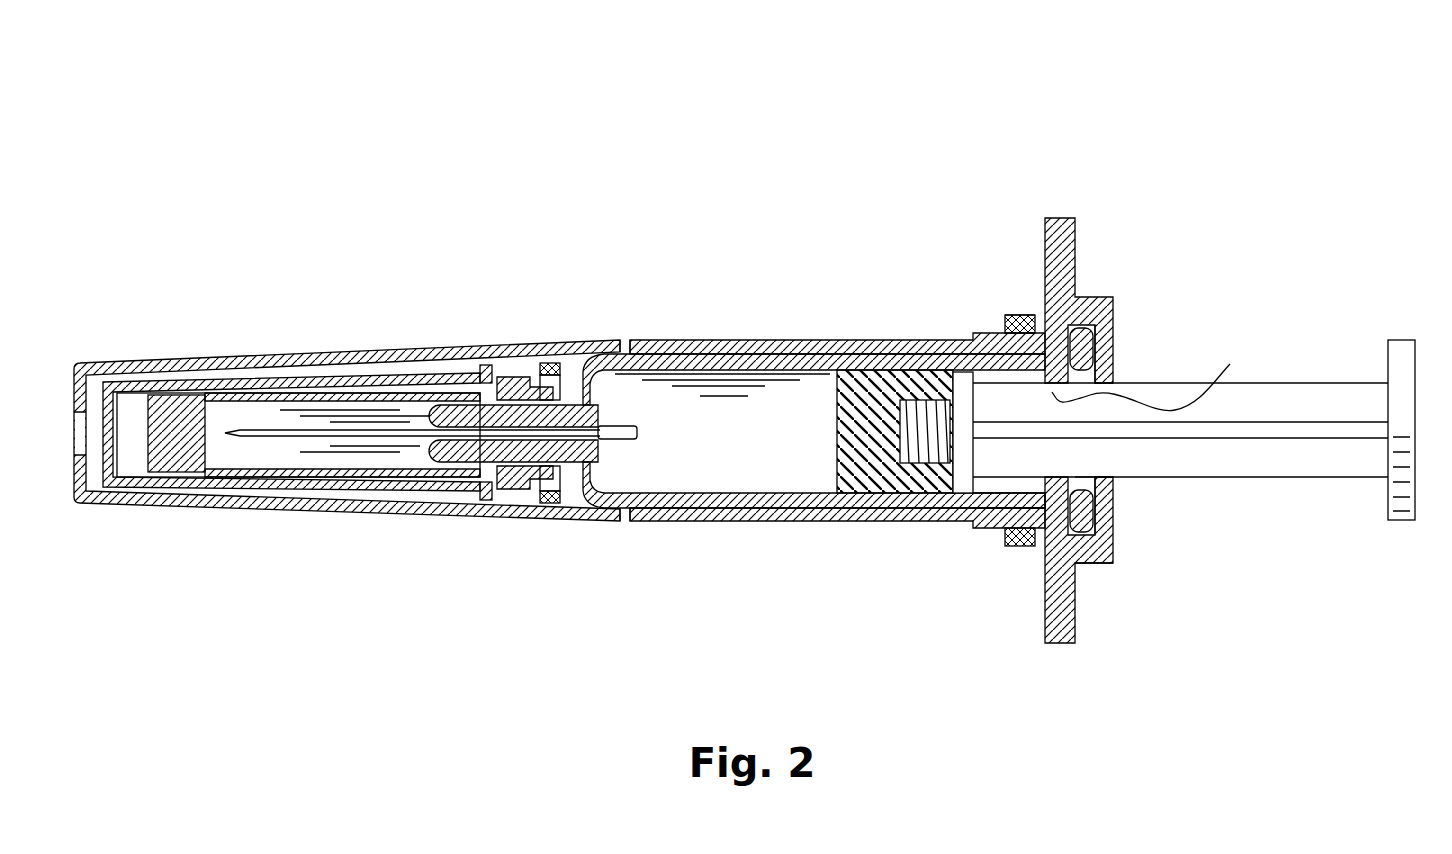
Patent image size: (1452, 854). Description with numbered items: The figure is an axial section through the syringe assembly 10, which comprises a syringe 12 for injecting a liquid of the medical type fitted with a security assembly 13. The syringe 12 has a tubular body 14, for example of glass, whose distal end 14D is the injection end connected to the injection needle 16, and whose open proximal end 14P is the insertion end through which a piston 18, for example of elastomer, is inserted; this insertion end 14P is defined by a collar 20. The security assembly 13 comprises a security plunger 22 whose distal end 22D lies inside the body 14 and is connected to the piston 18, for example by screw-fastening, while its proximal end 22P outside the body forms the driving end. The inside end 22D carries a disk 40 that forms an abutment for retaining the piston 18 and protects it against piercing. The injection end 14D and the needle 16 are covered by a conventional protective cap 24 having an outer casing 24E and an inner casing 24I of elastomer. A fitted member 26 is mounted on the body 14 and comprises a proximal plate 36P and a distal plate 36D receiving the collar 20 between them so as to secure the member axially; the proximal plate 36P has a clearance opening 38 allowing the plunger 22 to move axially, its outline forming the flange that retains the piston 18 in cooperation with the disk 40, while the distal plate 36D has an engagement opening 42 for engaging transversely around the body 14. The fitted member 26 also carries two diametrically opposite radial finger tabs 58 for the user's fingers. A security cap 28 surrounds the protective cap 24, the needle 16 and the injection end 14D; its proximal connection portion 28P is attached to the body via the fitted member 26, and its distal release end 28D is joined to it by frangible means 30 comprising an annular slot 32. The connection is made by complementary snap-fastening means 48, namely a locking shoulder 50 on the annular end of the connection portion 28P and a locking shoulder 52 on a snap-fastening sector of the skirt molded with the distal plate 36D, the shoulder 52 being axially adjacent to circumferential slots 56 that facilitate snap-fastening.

The syringe assembly 10 is at (611, 210).
The syringe 12 is at (770, 395).
The security assembly 13 is at (384, 346).
The tubular body 14 is at (708, 366).
The distal end of the body 14D is at (497, 408).
The proximal end of the body 14P is at (1040, 548).
The injection needle 16 is at (378, 433).
The piston 18 is at (833, 462).
The collar 20 is at (1093, 348).
The security plunger 22 is at (1198, 466).
The distal end of the plunger 22D is at (963, 482).
The proximal end of the plunger 22P is at (1375, 466).
The protective cap 24 is at (305, 494).
The outer casing 24E is at (232, 490).
The inner casing 24I is at (152, 450).
The fitted member 26 is at (1142, 290).
The security cap 28 is at (237, 350).
The distal end of the security cap 28D is at (152, 360).
The proximal portion of the security cap 28P is at (875, 352).
The frangible means 30 is at (622, 516).
The annular slot 32 is at (626, 352).
The proximal plate 36P is at (1114, 352).
The distal plate 36D is at (1085, 566).
The clearance opening 38 is at (1105, 476).
The disk 40 is at (905, 482).
The engagement opening 42 is at (1150, 373).
The complementary snap-fastening means 48 is at (1016, 296).
The locking shoulder 50 is at (1022, 320).
The locking shoulder 52 is at (1036, 312).
The circumferential slots 56 is at (1040, 546).
The radial finger tabs 58 is at (1077, 238).